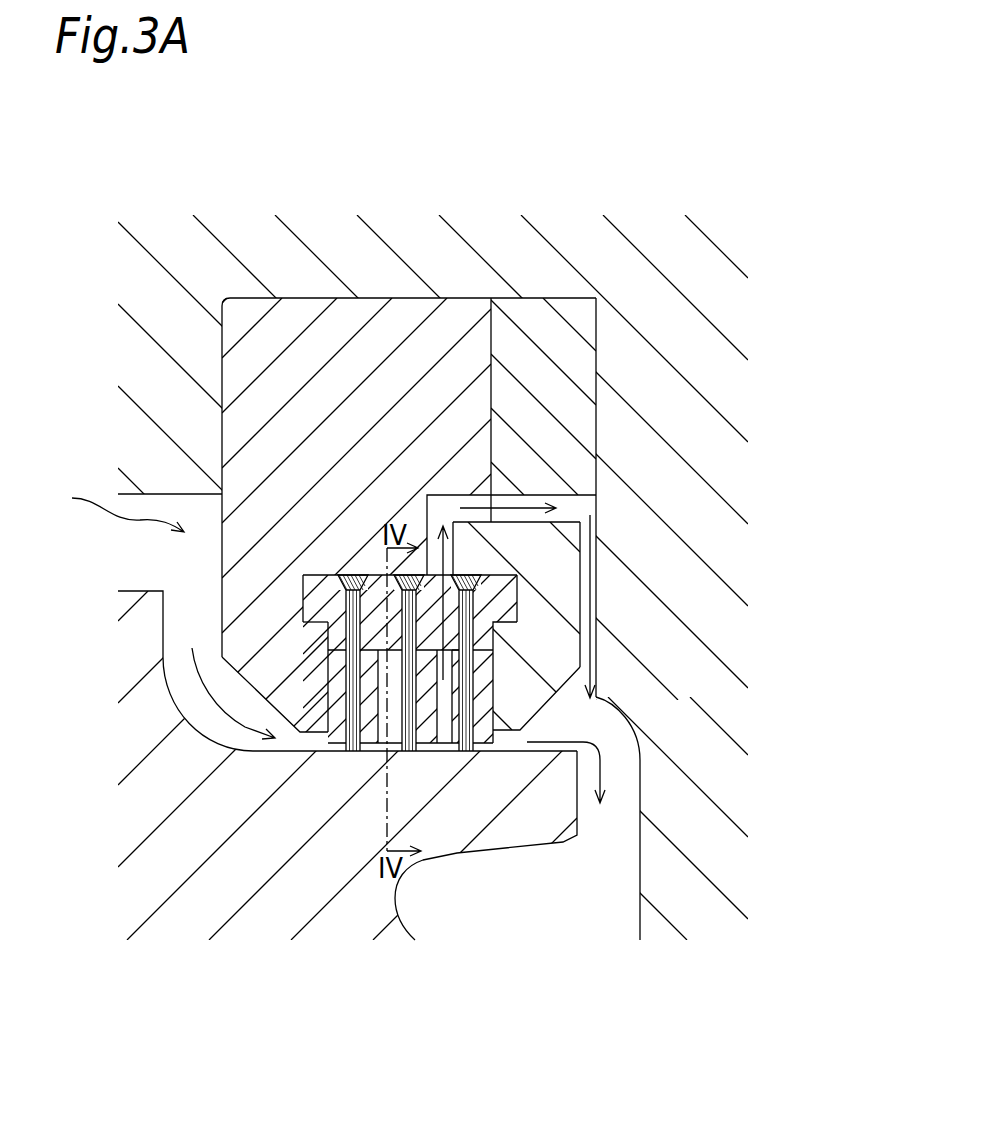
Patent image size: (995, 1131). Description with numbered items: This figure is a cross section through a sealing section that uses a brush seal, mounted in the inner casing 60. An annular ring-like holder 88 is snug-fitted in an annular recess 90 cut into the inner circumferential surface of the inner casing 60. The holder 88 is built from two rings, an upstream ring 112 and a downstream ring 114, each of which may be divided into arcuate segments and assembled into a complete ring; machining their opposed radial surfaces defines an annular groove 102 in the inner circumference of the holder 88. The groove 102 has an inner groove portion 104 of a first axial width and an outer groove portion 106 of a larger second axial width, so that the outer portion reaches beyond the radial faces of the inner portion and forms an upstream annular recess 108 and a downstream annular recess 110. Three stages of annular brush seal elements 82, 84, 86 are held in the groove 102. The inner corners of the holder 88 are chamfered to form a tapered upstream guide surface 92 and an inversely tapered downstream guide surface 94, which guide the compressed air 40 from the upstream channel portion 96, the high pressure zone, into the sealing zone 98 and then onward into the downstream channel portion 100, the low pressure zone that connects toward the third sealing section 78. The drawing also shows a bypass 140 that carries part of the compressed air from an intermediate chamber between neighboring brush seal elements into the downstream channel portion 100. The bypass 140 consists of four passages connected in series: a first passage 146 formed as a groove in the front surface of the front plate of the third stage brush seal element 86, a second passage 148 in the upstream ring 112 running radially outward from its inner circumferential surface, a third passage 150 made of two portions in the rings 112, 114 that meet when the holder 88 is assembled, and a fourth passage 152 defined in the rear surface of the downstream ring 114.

The compressed air 40 is at (203, 718).
The inner casing 60 is at (683, 318).
The third sealing section 78 is at (604, 286).
The first stage brush seal element 82 is at (352, 753).
The second stage brush seal element 84 is at (410, 753).
The third stage brush seal element 86 is at (453, 753).
The holder 88 is at (409, 438).
The annular recess 90 is at (409, 438).
The upstream tapered guide surface 92 is at (240, 685).
The downstream inversely-tapered guide surface 94 is at (560, 717).
The upstream channel portion 96 is at (183, 622).
The sealing zone 98 is at (452, 755).
The downstream channel portion 100 is at (617, 737).
The annular groove 102 is at (327, 572).
The inner groove portion 104 is at (328, 667).
The outer groove portion 106 is at (296, 577).
The upstream annular recess 108 is at (303, 600).
The downstream annular recess 110 is at (517, 578).
The upstream ring 112 is at (443, 330).
The downstream ring 114 is at (535, 330).
The bypass 140 is at (575, 477).
The first passage 146 is at (448, 598).
The second passage 148 is at (437, 520).
The third passage 150 is at (470, 502).
The fourth passage 152 is at (590, 592).